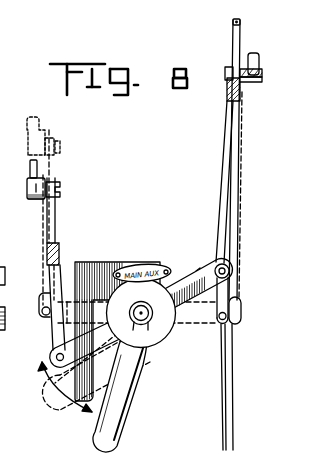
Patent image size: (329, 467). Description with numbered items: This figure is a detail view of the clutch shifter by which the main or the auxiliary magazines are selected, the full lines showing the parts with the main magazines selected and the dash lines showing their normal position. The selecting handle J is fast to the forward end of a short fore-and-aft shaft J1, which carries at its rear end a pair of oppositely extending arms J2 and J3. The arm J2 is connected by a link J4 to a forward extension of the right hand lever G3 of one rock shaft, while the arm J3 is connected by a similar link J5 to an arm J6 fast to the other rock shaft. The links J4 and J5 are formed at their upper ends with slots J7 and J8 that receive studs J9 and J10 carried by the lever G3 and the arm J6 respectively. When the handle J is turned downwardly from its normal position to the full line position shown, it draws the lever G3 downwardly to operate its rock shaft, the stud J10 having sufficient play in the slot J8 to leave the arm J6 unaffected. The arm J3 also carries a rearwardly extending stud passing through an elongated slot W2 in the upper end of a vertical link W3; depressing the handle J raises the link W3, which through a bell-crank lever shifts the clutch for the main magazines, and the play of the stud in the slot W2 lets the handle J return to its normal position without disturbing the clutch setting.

The selecting handle J is at (128, 397).
The fore-and-aft shaft J1 is at (148, 345).
The arm J2 is at (52, 387).
The arm J3 is at (183, 277).
The link J4 is at (60, 268).
The link J5 is at (222, 140).
The arm J6 is at (1, 305).
The slot J7 is at (58, 231).
The slot J8 is at (233, 25).
The stud J9 is at (60, 186).
The stud J10 is at (228, 80).
The right hand lever G3 is at (31, 189).
The elongated slot W2 is at (217, 318).
The vertical link W3 is at (223, 352).